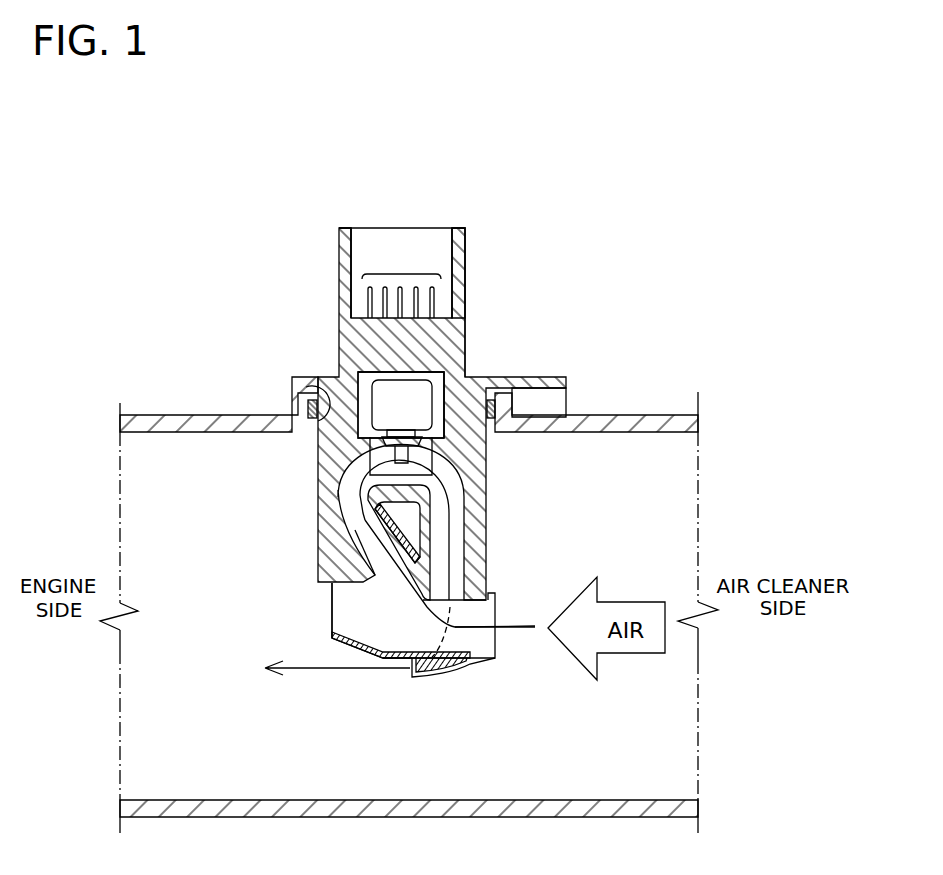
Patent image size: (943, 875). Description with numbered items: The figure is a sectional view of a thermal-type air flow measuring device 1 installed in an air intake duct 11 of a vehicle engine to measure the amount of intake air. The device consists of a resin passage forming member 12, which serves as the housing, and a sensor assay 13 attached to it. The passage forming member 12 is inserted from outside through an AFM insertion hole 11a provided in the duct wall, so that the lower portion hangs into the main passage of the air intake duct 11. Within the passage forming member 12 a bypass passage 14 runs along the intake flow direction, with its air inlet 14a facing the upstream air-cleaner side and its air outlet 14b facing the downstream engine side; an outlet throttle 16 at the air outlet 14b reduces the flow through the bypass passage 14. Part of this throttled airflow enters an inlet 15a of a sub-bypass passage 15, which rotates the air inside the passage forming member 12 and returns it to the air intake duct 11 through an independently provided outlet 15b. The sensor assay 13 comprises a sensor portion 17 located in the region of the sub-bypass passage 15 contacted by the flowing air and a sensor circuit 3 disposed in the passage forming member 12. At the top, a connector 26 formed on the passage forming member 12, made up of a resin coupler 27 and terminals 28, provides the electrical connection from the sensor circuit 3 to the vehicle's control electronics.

The air flow measuring device 1 is at (273, 471).
The sensor circuit 3 is at (422, 443).
The air intake duct 11 is at (148, 422).
The AFM insertion hole 11a is at (300, 394).
The passage forming member 12 is at (330, 378).
The sensor assay 13 is at (553, 288).
The bypass passage 14 is at (462, 640).
The air inlet 14a is at (495, 640).
The air outlet 14b is at (332, 625).
The sub-bypass passage 15 is at (456, 493).
The inlet 15a is at (378, 567).
The outlet 15b is at (410, 660).
The outlet throttle 16 is at (363, 643).
The sensor portion 17 is at (415, 390).
The connector 26 is at (311, 178).
The resin coupler 27 is at (339, 268).
The terminals 28 is at (400, 274).